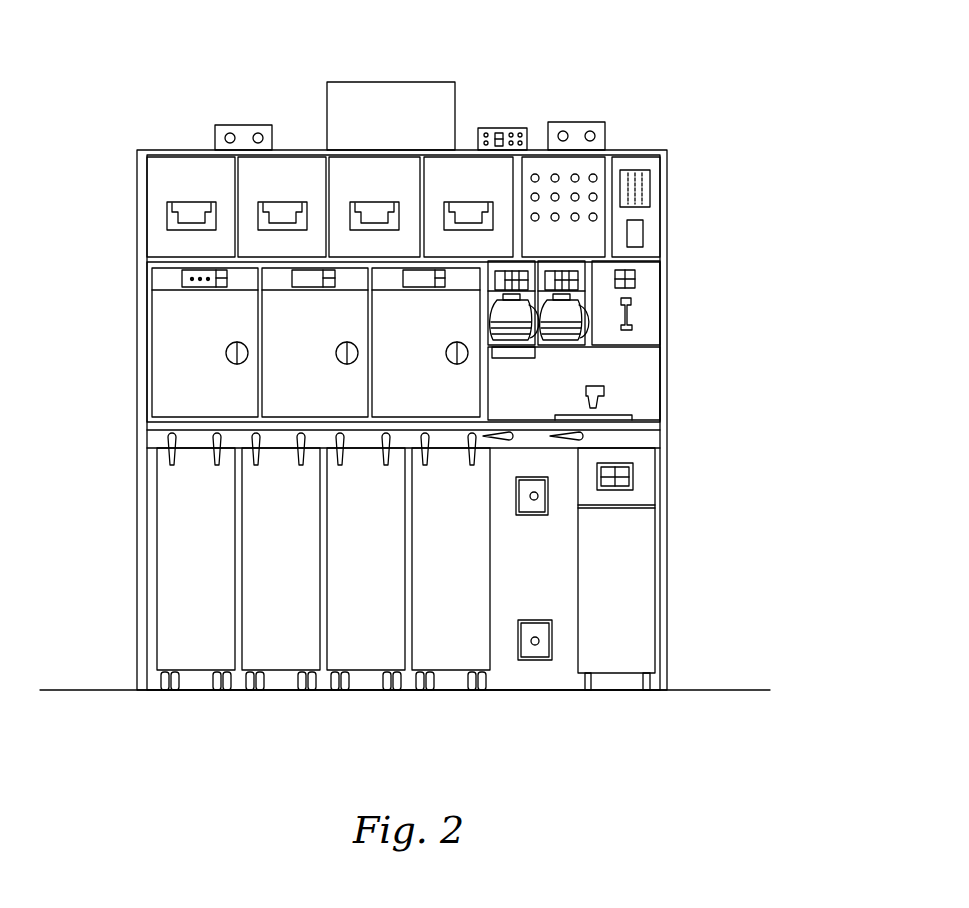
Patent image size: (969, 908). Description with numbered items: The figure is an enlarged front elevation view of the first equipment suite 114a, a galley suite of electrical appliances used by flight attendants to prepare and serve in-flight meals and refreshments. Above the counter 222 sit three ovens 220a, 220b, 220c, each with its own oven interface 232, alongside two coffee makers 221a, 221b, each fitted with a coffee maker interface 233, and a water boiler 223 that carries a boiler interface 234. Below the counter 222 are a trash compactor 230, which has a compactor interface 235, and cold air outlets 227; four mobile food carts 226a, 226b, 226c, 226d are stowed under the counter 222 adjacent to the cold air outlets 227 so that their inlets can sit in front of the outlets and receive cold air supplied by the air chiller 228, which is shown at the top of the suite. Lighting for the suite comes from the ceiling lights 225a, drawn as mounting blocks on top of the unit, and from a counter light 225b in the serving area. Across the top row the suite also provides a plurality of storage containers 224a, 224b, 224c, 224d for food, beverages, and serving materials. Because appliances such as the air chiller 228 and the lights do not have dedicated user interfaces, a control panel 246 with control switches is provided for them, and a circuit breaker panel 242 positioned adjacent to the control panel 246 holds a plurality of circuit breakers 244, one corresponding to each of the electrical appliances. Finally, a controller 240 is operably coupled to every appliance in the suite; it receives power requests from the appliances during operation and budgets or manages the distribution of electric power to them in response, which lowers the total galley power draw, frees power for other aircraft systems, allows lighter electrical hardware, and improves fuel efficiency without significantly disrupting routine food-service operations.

The first equipment suite 114a is at (163, 80).
The ceiling lights 225a is at (262, 125).
The air chiller 228 is at (407, 129).
The controller 240 is at (497, 128).
The storage container 224a is at (213, 192).
The storage container 224b is at (304, 192).
The storage container 224c is at (395, 192).
The storage container 224d is at (489, 192).
The control panel 246 is at (565, 173).
The circuit breakers 244 is at (637, 172).
The circuit breaker panel 242 is at (650, 223).
The counter 222 is at (258, 343).
The oven 220a is at (165, 342).
The oven 220b is at (335, 329).
The oven 220c is at (445, 329).
The oven interface 232 is at (185, 276).
The coffee maker interface 233 is at (590, 262).
The coffee maker 221a is at (583, 335).
The coffee maker 221b is at (532, 328).
The water boiler 223 is at (687, 295).
The boiler interface 234 is at (635, 280).
The counter light 225b is at (512, 358).
The mobile food cart 226a is at (215, 567).
The mobile food cart 226b is at (300, 567).
The mobile food cart 226c is at (390, 567).
The mobile food cart 226d is at (470, 567).
The cold air outlets 227 is at (548, 515).
The trash compactor 230 is at (652, 569).
The compactor interface 235 is at (633, 480).